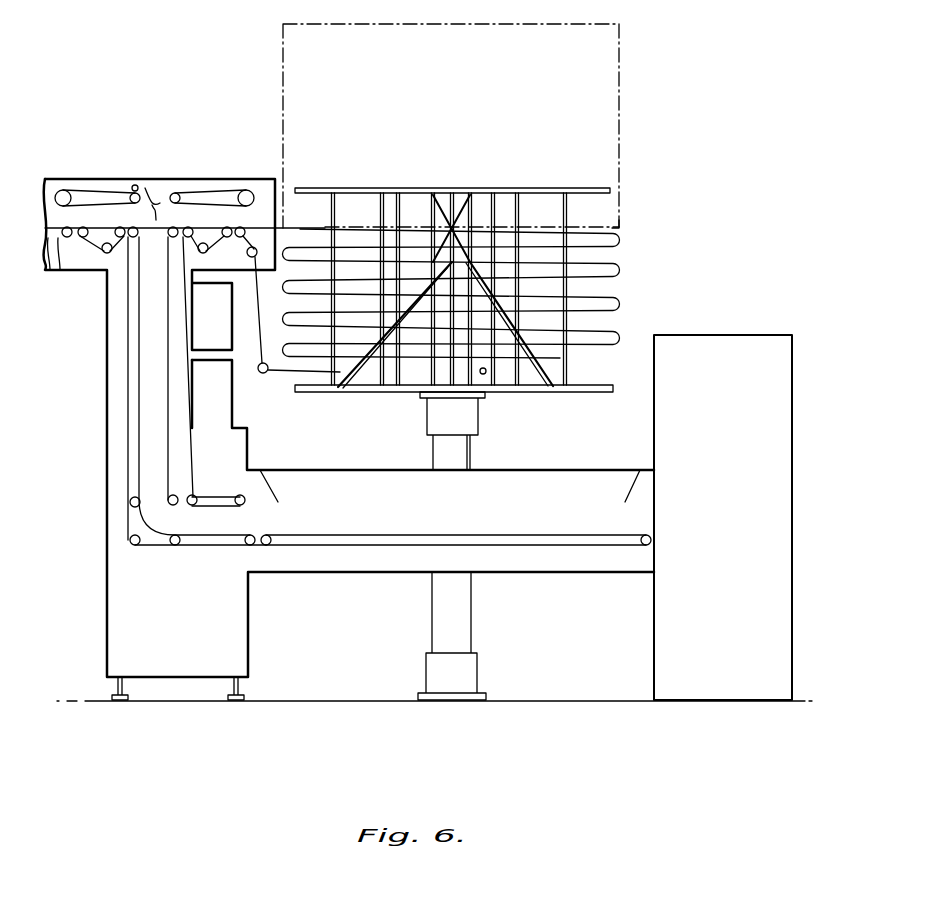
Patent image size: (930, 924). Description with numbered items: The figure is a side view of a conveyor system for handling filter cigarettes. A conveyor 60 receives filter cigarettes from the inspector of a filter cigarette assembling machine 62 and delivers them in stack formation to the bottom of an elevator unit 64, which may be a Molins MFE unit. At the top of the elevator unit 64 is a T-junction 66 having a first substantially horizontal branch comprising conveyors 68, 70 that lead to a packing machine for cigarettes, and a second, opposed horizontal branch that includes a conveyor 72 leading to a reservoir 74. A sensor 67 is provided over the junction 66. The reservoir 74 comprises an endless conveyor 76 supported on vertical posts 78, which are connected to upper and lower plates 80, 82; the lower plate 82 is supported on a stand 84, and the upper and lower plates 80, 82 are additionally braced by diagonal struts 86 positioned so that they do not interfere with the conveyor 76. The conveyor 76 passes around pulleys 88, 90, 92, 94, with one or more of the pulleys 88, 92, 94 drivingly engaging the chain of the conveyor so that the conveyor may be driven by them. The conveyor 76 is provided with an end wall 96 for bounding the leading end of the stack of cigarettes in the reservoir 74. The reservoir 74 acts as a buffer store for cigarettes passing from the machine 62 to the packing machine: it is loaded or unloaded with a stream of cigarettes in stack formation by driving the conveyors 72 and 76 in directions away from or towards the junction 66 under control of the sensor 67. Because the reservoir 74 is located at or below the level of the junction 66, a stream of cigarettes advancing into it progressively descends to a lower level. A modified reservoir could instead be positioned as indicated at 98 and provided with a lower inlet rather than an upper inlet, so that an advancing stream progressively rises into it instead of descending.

The conveyor 60 is at (510, 534).
The filter cigarette assembling machine 62 is at (733, 528).
The elevator unit 64 is at (100, 408).
The T-junction 66 is at (160, 195).
The sensor 67 is at (137, 186).
The conveyor 68 is at (103, 254).
The conveyor 70 is at (60, 268).
The conveyor 72 is at (215, 225).
The reservoir 74 is at (622, 226).
The conveyor 76 is at (610, 306).
The vertical posts 78 is at (382, 190).
The upper plate 80 is at (503, 188).
The lower plate 82 is at (352, 394).
The stand 84 is at (432, 614).
The diagonal struts 86 is at (340, 390).
The pulley 88 is at (242, 230).
The pulley 90 is at (250, 262).
The pulley 92 is at (264, 373).
The pulley 94 is at (485, 375).
The end wall 96 is at (413, 345).
The modified reservoir position 98 is at (620, 53).